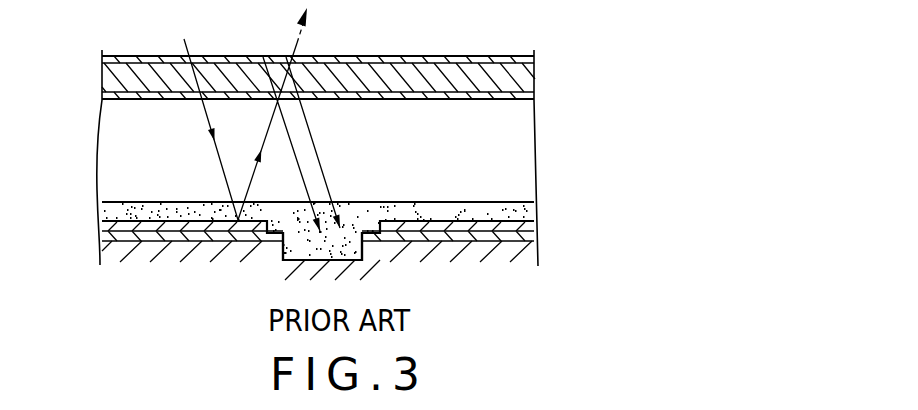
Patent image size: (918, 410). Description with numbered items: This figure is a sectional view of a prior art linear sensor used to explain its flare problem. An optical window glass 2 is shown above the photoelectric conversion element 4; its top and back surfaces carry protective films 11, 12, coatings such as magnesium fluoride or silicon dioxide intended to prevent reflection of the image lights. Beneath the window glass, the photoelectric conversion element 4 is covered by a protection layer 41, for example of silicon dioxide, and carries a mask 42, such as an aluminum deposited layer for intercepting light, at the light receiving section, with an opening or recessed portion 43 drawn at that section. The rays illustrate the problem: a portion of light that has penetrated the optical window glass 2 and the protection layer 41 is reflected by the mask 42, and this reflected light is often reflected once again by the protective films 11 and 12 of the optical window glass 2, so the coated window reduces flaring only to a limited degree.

The optical window glass 2 is at (535, 75).
The protective film 11 is at (389, 56).
The protective film 12 is at (408, 100).
The photoelectric conversion element 4 is at (438, 190).
The protection layer 41 is at (158, 202).
The mask 42 is at (100, 228).
The recessed diffusing portion 43 is at (340, 260).